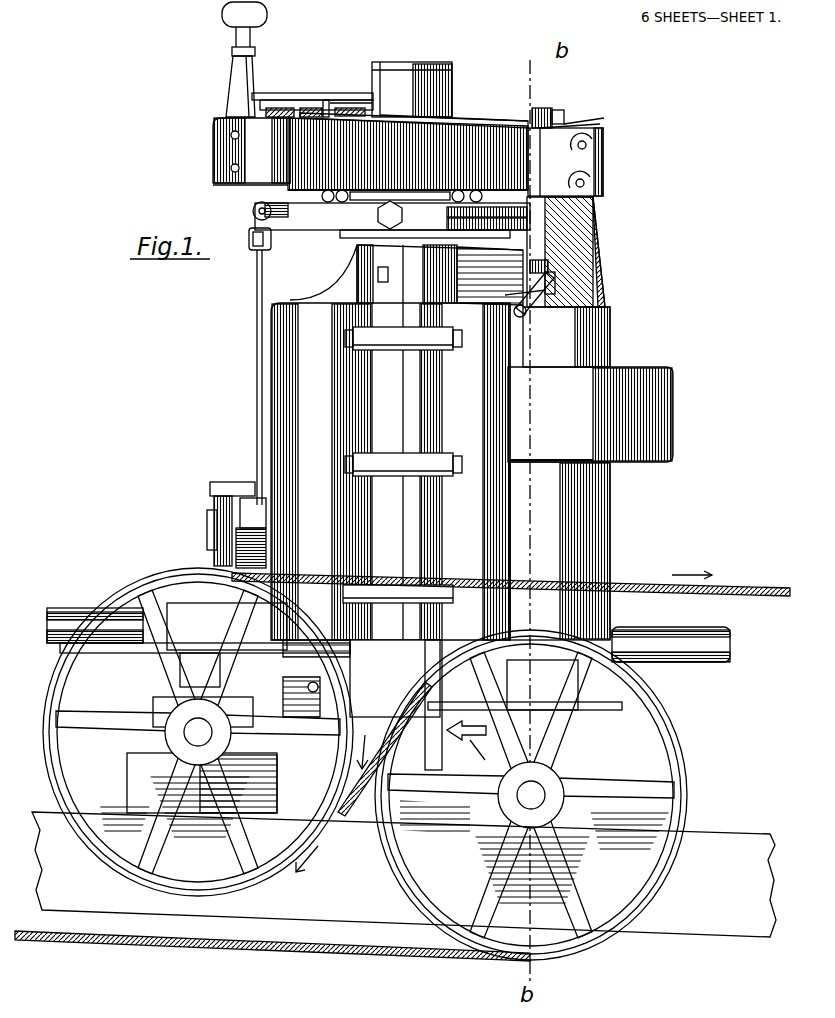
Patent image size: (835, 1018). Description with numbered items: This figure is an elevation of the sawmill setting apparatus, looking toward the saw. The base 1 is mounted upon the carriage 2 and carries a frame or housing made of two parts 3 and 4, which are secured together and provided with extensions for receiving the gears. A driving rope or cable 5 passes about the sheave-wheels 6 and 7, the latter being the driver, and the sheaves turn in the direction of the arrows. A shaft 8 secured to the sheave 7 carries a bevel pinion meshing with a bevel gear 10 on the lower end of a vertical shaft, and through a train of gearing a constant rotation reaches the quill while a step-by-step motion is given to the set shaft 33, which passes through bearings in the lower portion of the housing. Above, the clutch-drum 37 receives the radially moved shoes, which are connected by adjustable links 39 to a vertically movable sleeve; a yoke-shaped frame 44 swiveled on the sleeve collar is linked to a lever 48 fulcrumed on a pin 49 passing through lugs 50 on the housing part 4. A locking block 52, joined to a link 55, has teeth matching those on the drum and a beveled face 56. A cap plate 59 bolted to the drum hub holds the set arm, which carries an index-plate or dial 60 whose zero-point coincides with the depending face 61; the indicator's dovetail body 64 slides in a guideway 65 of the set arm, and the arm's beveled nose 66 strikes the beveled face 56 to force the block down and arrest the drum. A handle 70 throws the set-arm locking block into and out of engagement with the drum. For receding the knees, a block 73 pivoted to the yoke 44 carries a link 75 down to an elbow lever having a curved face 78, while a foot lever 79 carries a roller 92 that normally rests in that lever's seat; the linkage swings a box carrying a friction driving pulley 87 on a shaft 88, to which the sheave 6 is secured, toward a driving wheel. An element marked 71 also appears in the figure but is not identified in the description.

The base 1 is at (365, 815).
The carriage 2 is at (404, 874).
The frame or housing part 3 is at (397, 481).
The frame or housing part 4 is at (585, 352).
The driving rope or cable 5 is at (680, 592).
The sheave-wheel 6 is at (250, 880).
The sheave-wheel 7 is at (675, 855).
The shaft 8 is at (545, 795).
The bevel gear 10 is at (465, 743).
The set shaft 33 is at (72, 608).
The clutch-drum 37 is at (300, 148).
The adjustable links 39 is at (408, 160).
The yoke-shaped frame 44 is at (345, 218).
The lever 48 is at (530, 300).
The pin 49 is at (555, 286).
The lugs or ears 50 is at (548, 266).
The locking block 52 is at (542, 108).
The link 55 is at (604, 118).
The beveled face 56 is at (562, 110).
The cap plate 59 is at (418, 63).
The index-plate or dial 60 is at (505, 121).
The depending face 61 is at (250, 175).
The dovetail arm or body portion 64 is at (309, 103).
The guideway 65 is at (348, 100).
The nose 66 is at (281, 101).
The handle 70 is at (241, 72).
The end block 71 is at (562, 162).
The block 73 is at (271, 238).
The link 75 is at (257, 305).
The curved face 78 is at (266, 540).
The foot lever 79 is at (225, 482).
The friction driving pulley 87 is at (160, 705).
The shaft 88 is at (212, 732).
The roller 92 is at (262, 510).